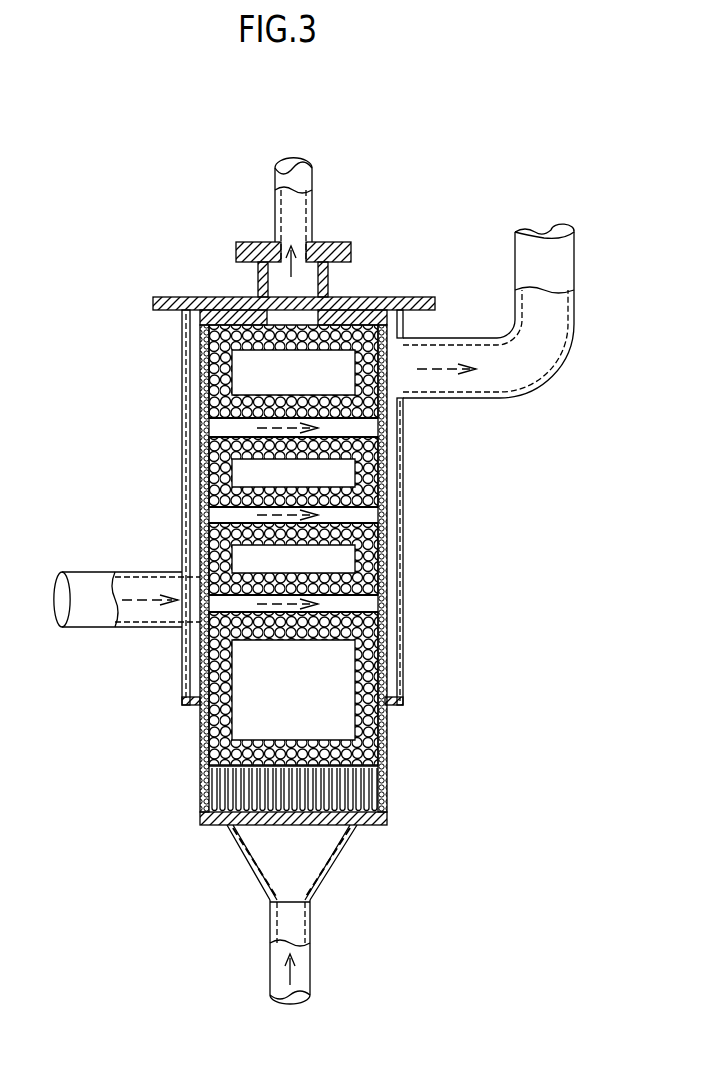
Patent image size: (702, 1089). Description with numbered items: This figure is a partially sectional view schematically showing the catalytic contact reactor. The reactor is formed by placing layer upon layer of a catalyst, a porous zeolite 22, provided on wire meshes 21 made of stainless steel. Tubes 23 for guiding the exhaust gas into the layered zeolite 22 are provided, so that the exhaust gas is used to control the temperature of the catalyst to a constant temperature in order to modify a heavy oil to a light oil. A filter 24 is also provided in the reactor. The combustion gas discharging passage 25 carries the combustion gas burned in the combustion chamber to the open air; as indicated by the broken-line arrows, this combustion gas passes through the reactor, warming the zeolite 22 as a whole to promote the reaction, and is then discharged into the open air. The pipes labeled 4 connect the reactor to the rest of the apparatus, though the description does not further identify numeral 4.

The pipe 4 is at (302, 187).
The wire meshes 21 is at (365, 778).
The porous zeolite 22 is at (213, 373).
The tubes 23 is at (213, 428).
The filter 24 is at (227, 791).
The combustion gas discharging passage 25 is at (412, 383).